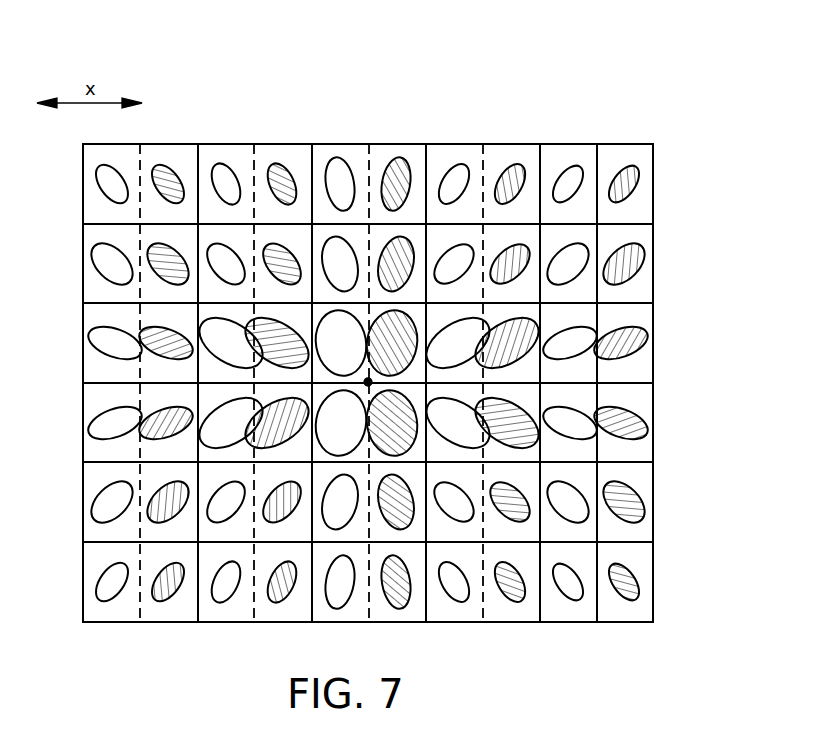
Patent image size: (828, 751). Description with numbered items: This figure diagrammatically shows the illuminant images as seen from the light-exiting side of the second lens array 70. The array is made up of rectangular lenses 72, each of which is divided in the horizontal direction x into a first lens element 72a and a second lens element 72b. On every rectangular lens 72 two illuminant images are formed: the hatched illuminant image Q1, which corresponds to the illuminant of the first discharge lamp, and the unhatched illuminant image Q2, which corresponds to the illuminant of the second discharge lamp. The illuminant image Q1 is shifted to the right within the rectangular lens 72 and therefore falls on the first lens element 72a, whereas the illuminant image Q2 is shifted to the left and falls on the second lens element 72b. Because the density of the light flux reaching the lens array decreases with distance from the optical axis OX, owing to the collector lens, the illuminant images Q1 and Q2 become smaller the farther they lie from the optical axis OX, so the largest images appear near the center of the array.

The second lens array 70 is at (418, 103).
The rectangular lens 72 is at (655, 64).
The first lens element 72a is at (635, 157).
The second lens element 72b is at (580, 157).
The illuminant image Q1 is at (633, 192).
The illuminant image Q2 is at (562, 183).
The optical axis OX is at (368, 382).